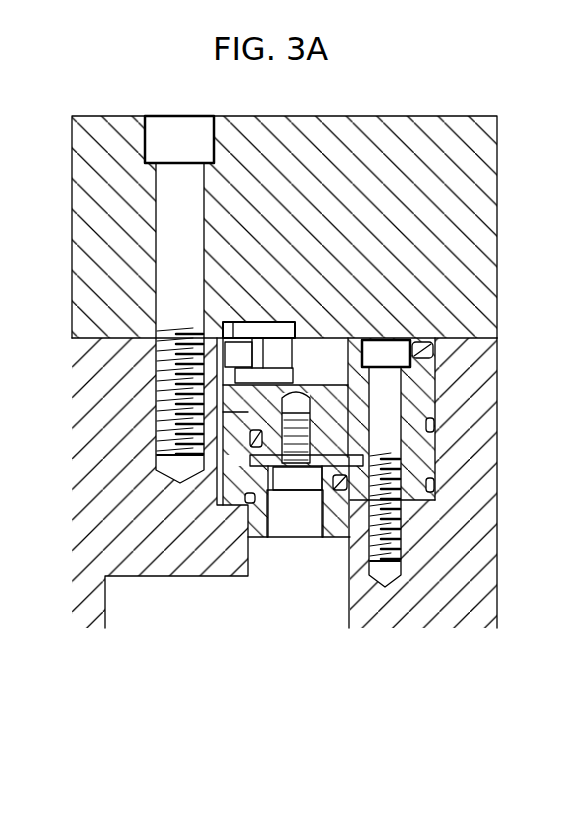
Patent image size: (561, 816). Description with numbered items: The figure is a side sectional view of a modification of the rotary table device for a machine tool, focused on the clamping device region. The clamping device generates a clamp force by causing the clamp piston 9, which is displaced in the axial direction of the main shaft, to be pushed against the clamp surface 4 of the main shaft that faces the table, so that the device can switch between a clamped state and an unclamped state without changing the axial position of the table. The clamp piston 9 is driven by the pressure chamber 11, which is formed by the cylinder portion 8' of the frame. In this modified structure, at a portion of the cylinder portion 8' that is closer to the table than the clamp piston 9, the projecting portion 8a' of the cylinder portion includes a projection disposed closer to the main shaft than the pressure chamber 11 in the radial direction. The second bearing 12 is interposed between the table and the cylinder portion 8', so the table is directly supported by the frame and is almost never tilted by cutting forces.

The clamp surface 4 is at (255, 537).
The cylinder portion 8' is at (280, 408).
The projecting portion of the cylinder portion 8a' is at (315, 208).
The clamp piston 9 is at (303, 527).
The pressure chamber 11 is at (375, 461).
The second bearing 12 is at (288, 333).